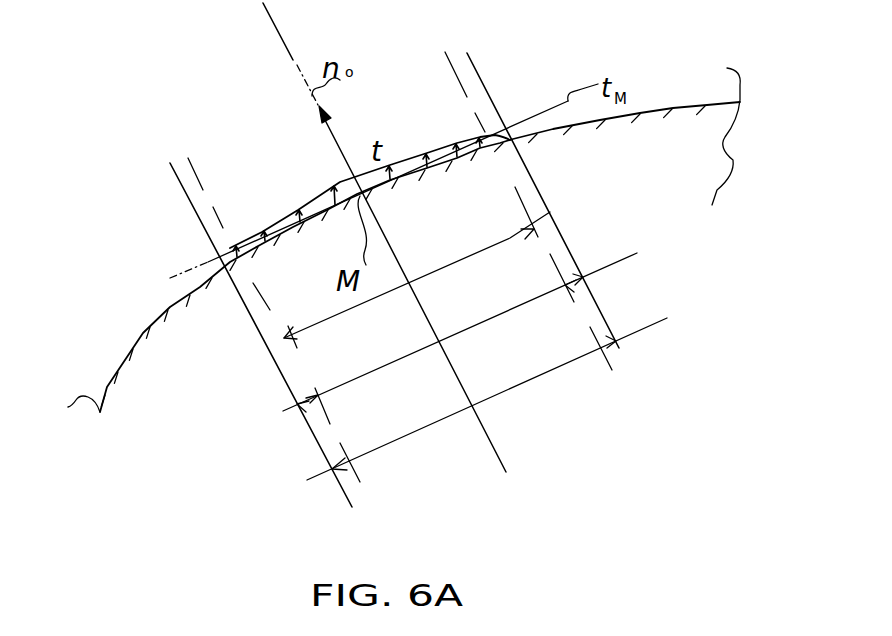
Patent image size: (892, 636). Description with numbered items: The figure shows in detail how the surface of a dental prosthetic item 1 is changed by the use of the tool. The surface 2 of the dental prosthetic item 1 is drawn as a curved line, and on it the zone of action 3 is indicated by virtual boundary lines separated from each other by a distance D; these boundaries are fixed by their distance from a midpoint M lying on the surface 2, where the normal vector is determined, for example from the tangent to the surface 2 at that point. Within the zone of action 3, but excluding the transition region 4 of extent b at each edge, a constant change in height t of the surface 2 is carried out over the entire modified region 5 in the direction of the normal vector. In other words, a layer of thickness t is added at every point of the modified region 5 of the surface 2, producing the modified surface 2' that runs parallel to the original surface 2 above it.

The dental prosthetic item 1 is at (187, 366).
The surface 2 is at (404, 240).
The modified surface 2' is at (370, 190).
The zone of action 3 is at (647, 328).
The transition region 4 is at (618, 258).
The modified region 5 is at (550, 212).